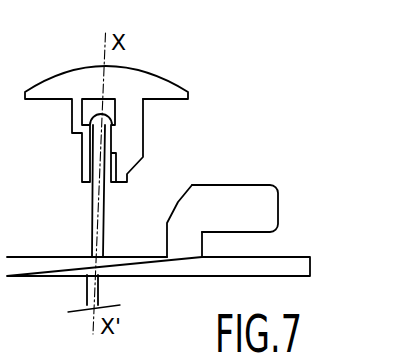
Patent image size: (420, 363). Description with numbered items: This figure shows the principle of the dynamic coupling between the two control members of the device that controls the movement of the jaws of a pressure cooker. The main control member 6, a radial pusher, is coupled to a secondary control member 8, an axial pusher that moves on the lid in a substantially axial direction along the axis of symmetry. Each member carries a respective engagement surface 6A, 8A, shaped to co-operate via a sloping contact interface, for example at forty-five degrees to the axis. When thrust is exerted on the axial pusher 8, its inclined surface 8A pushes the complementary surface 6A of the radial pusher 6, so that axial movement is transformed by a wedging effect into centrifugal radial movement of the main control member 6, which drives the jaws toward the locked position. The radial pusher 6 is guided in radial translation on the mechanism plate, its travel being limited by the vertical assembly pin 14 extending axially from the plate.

The secondary control member 8 is at (133, 76).
The engagement surface 8A is at (128, 175).
The assembly pin 14 is at (92, 224).
The main control member 6 is at (163, 209).
The engagement surface 6A is at (184, 200).